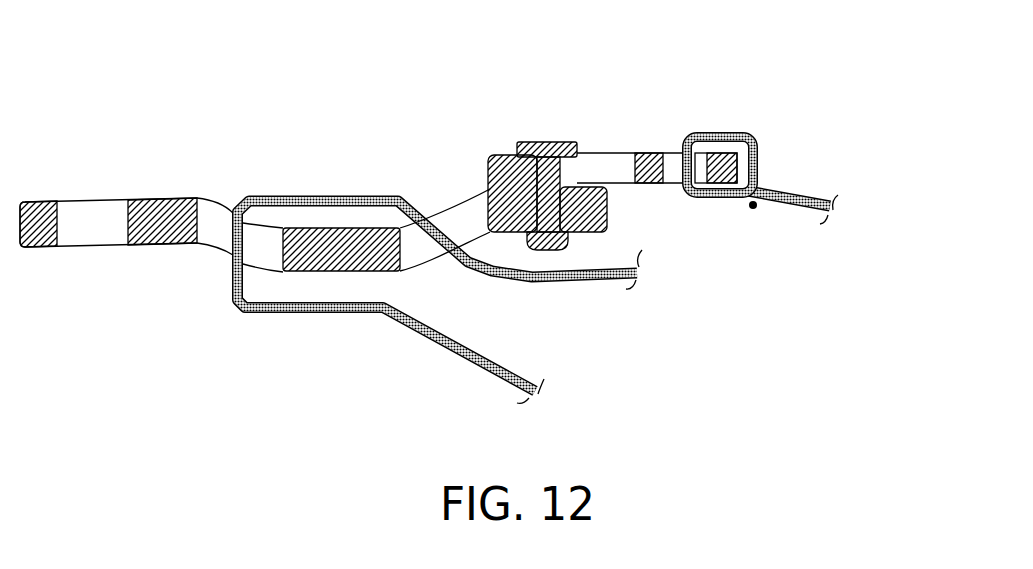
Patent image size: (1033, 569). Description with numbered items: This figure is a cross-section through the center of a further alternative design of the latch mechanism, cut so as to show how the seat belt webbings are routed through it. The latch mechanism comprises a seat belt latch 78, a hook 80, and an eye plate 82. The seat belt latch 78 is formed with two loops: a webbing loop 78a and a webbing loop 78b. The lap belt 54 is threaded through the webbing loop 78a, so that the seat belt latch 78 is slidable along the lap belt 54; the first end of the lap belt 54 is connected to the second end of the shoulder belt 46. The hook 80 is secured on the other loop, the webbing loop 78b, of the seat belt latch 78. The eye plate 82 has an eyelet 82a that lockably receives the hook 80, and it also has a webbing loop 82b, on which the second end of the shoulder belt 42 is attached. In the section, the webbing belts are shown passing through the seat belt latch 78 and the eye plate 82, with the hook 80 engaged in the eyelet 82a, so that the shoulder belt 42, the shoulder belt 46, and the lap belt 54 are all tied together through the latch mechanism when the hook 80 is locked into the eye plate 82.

The shoulder belt 42 is at (793, 211).
The shoulder belt 46 is at (587, 280).
The lap belt 54 is at (425, 333).
The seat belt latch 78 is at (220, 218).
The webbing loop 78a is at (337, 227).
The webbing loop 78b is at (487, 202).
The hook 80 is at (552, 142).
The eye plate 82 is at (652, 160).
The eyelet 82a is at (600, 162).
The webbing loop 82b is at (740, 134).